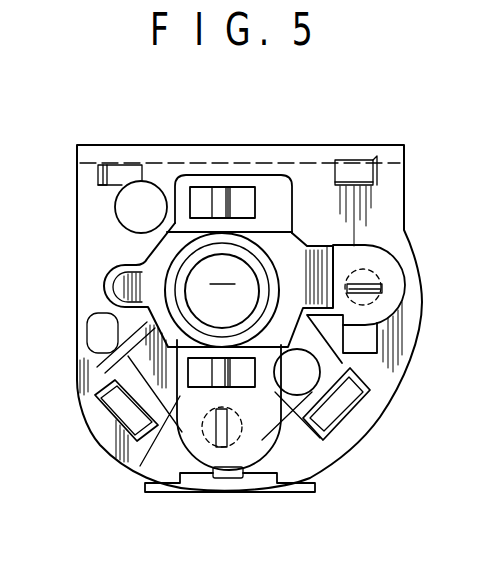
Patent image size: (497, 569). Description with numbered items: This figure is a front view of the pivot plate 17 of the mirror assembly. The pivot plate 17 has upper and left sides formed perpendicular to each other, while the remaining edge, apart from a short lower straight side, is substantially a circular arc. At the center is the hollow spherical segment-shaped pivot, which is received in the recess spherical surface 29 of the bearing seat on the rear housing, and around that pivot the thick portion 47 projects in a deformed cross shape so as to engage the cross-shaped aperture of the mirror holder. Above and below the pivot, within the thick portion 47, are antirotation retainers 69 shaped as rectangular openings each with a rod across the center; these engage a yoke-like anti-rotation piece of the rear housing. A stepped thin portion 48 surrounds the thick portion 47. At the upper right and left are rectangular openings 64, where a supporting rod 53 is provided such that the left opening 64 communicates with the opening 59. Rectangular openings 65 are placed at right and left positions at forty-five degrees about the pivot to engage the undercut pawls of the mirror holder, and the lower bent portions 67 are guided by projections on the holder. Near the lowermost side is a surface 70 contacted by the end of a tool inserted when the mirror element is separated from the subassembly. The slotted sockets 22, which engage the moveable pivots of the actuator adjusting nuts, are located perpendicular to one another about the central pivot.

The pivot plate 17 is at (414, 150).
The socket 22 is at (383, 280).
The recess spherical surface 29 is at (222, 290).
The thick portion 47 is at (103, 283).
The stepped thin portion 48 is at (92, 380).
The supporting rod 53 is at (131, 157).
The opening 59 is at (130, 215).
The rectangular opening 64 is at (98, 171).
The rectangular opening 65 is at (122, 402).
The lower bent portion 67 is at (120, 453).
The antirotation retainer 69 is at (247, 193).
The surface 70 is at (167, 477).